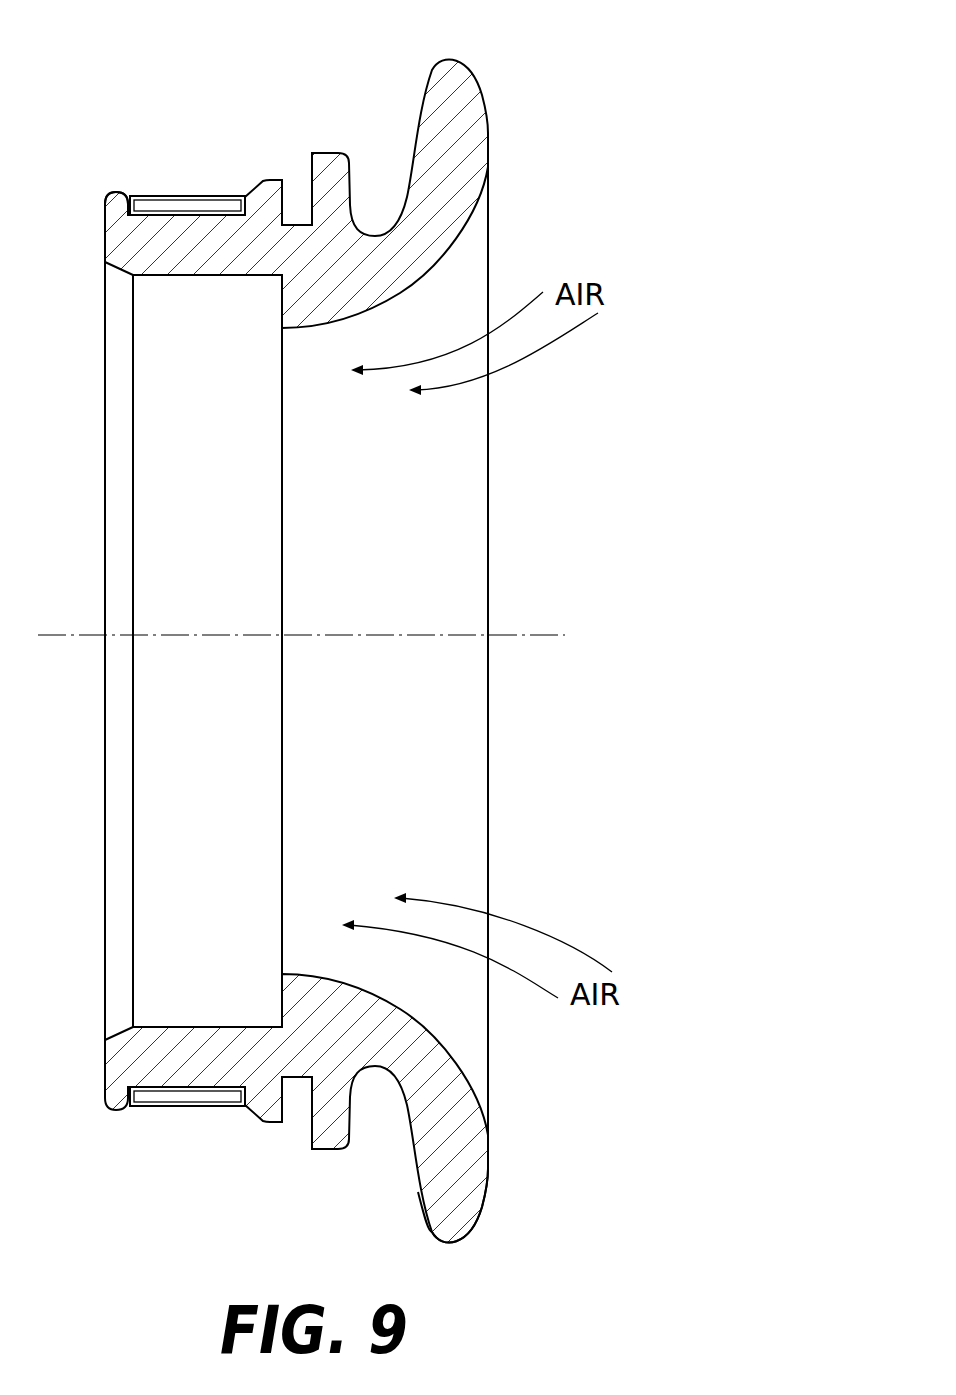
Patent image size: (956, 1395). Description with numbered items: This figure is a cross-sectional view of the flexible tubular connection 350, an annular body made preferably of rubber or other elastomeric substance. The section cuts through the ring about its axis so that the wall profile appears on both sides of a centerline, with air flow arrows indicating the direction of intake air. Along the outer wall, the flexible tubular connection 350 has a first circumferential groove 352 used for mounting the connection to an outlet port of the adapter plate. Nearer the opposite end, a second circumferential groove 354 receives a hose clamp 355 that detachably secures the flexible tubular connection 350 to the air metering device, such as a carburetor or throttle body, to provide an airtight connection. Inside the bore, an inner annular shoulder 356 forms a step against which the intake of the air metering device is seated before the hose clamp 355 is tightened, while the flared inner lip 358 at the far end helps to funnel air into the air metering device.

The flexible tubular connection 350 is at (523, 126).
The first circumferential groove 352 is at (297, 178).
The second circumferential groove 354 is at (138, 186).
The hose clamp 355 is at (203, 203).
The inner annular shoulder 356 is at (257, 296).
The inner lip 358 is at (468, 1197).